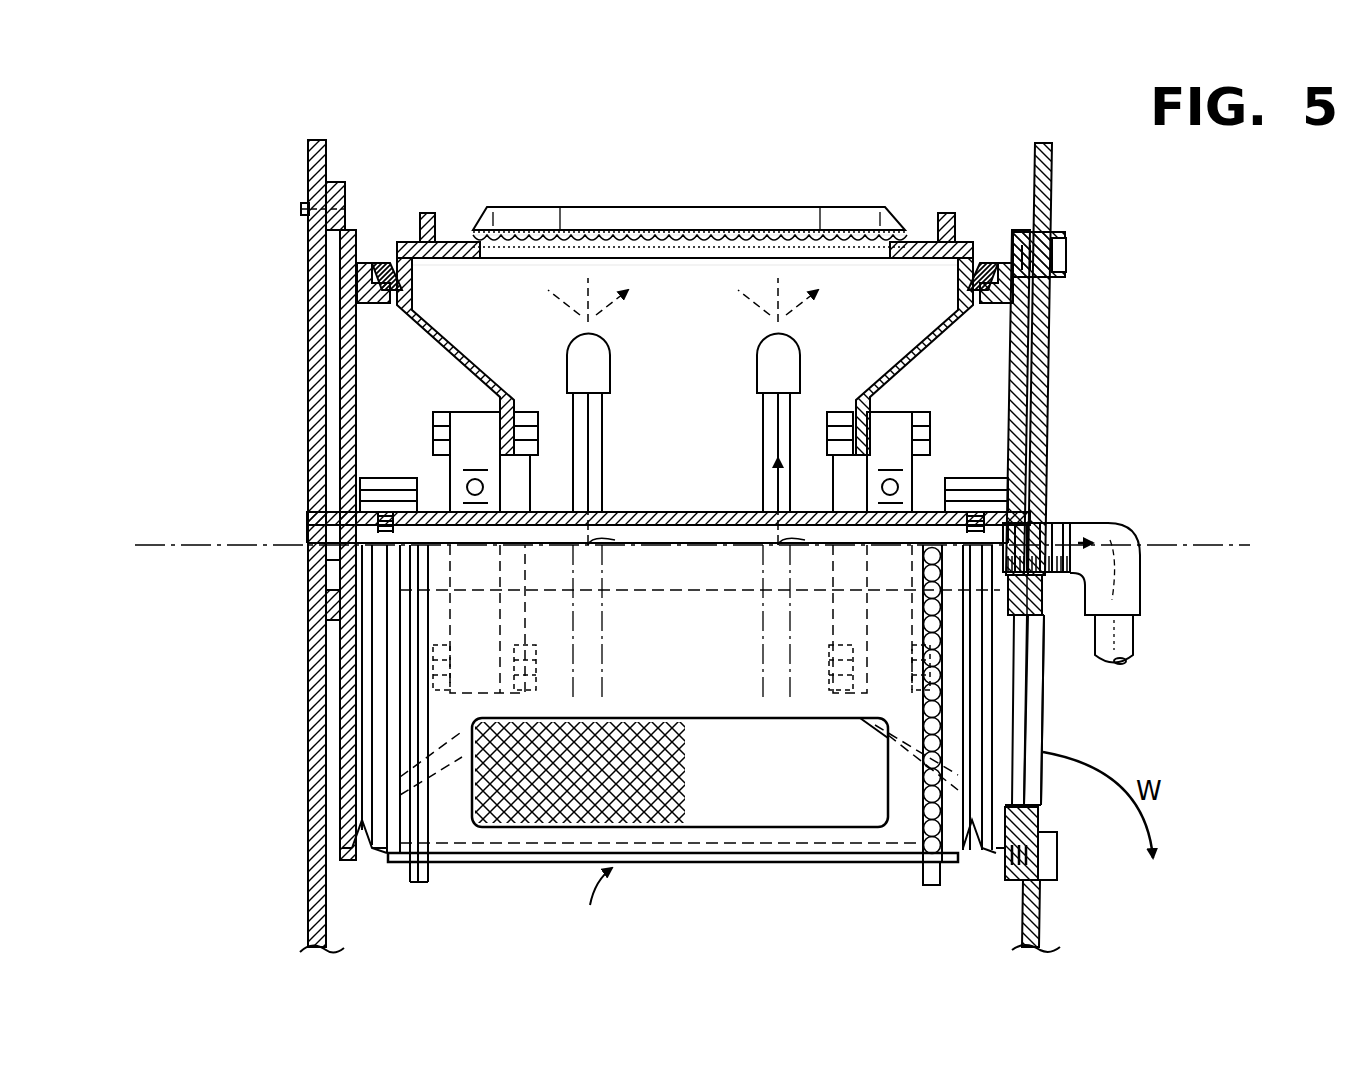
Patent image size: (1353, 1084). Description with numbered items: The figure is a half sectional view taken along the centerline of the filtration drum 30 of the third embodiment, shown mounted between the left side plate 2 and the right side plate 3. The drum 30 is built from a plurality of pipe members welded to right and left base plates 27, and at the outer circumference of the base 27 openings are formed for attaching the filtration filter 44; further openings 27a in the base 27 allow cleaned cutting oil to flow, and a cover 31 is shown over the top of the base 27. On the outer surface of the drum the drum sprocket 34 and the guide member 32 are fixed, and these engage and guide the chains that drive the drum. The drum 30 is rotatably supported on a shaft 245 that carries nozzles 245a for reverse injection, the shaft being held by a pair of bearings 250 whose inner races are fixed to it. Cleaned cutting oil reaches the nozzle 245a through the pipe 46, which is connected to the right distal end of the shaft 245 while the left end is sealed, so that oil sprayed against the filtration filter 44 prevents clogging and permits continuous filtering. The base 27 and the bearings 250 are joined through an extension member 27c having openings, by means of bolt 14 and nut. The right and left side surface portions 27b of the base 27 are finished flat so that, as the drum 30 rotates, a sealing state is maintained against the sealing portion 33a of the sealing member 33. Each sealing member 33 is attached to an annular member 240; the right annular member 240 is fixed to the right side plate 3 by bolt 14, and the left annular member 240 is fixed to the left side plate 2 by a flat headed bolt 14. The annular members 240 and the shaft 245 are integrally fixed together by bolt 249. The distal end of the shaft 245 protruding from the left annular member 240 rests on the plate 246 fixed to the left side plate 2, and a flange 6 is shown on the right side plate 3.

The left side plate 2 is at (315, 155).
The right side plate 3 is at (1052, 153).
The flange 6 is at (1043, 715).
The bolt 14 is at (302, 209).
The base plate 27 is at (452, 245).
The openings 27a is at (680, 265).
The side surface portions 27b is at (412, 283).
The extension member 27c is at (460, 362).
The filtration drum 30 is at (689, 586).
The transparent cover 31 is at (515, 215).
The guide member 32 is at (945, 213).
The sealing member 33 is at (357, 293).
The sealing portion 33a is at (383, 275).
The drum sprocket 34 is at (428, 213).
The filtration filter 44 is at (615, 240).
The pipe 46 is at (1120, 630).
The annular member 240 is at (345, 355).
The shaft 245 is at (665, 512).
The nozzle 245a is at (612, 372).
The plate 246 is at (330, 612).
The bolt 249 is at (380, 478).
The bearing 250 is at (465, 462).